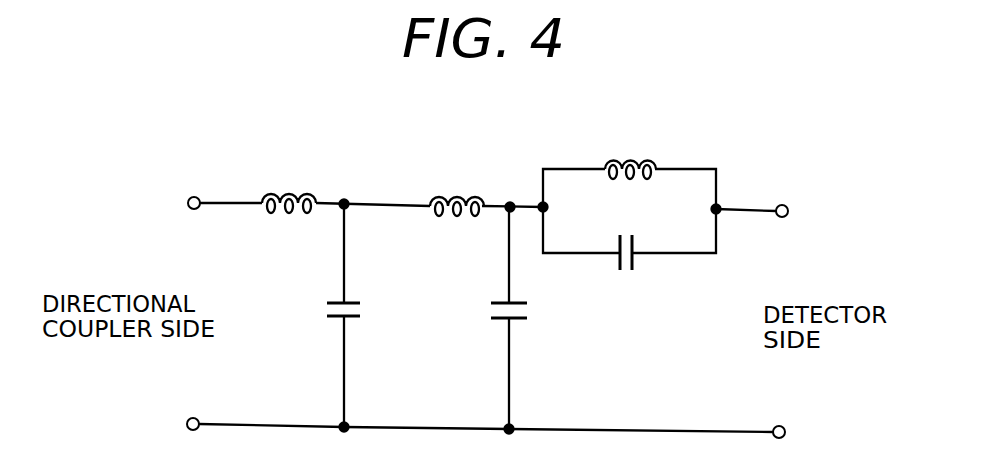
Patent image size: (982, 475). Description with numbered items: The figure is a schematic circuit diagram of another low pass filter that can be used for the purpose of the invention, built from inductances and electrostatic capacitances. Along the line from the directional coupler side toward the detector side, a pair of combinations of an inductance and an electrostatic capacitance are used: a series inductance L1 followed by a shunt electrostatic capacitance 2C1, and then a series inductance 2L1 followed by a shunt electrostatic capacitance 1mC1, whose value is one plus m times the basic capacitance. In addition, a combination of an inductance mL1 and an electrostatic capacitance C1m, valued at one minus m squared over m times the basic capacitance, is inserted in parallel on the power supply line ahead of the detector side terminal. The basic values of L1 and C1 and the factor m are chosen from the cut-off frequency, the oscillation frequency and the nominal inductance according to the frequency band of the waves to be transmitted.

The inductance L1 is at (287, 185).
The inductance 2L1 is at (452, 188).
The inductance mL1 is at (630, 152).
The electrostatic capacitance 2C1 is at (327, 308).
The electrostatic capacitance 1mC1 is at (493, 310).
The electrostatic capacitance C1m is at (626, 271).